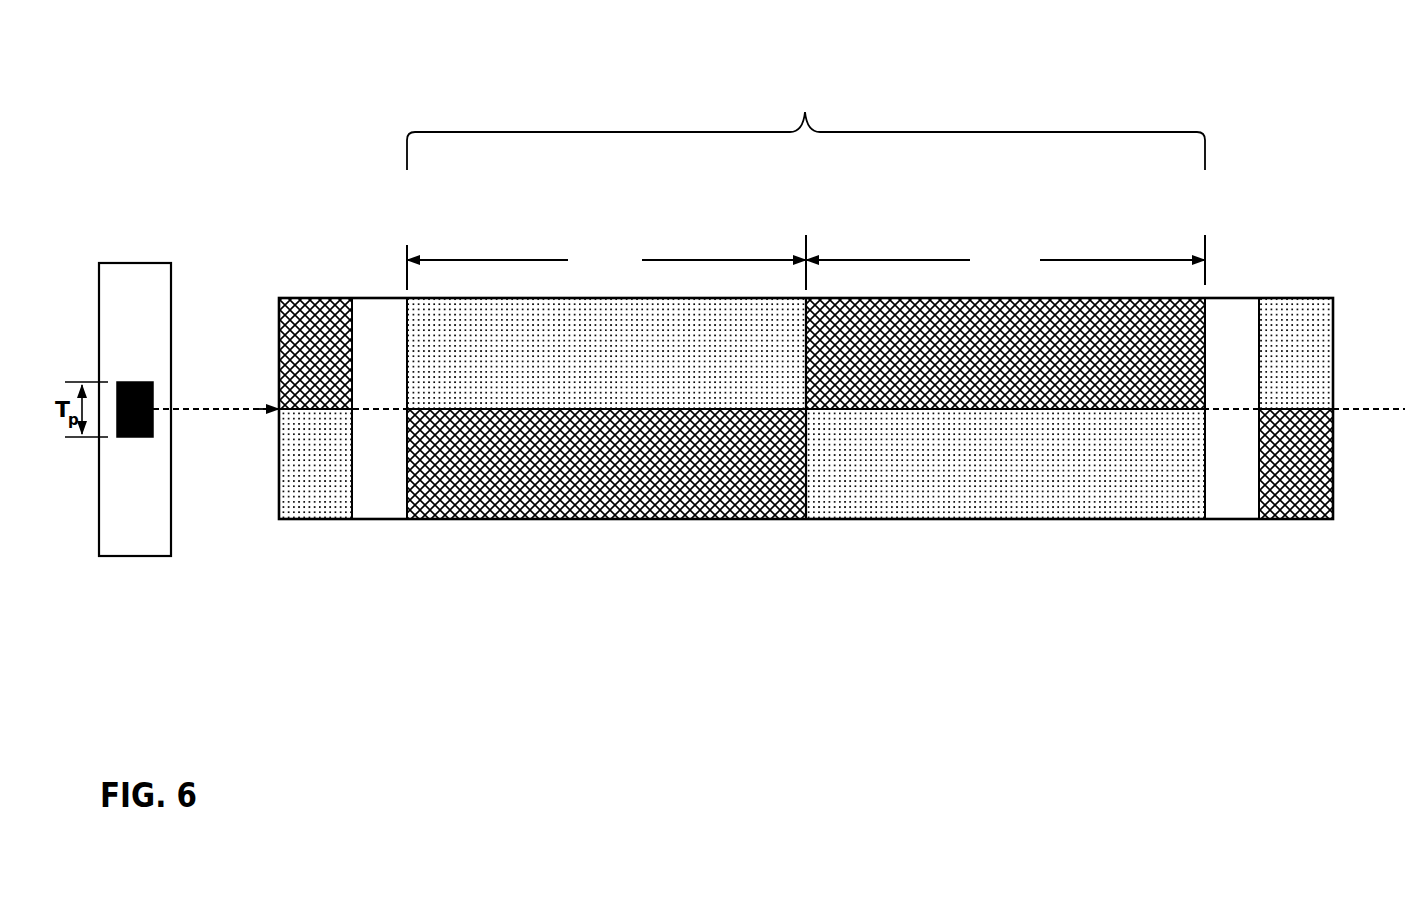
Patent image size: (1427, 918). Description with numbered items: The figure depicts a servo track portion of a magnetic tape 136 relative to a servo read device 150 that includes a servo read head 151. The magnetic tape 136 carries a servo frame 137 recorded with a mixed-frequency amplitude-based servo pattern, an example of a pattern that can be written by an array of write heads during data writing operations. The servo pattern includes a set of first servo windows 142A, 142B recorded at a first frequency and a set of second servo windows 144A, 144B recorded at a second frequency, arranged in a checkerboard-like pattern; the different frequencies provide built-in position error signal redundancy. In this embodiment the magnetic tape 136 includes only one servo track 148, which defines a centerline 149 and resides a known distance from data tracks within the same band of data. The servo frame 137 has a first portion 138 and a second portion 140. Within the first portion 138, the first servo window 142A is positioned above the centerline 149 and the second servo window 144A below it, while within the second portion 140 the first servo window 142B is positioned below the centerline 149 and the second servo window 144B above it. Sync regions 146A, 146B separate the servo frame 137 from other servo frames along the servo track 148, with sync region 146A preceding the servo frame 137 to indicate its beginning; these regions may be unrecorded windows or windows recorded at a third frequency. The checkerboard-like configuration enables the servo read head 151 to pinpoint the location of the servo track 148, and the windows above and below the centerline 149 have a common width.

The magnetic tape 136 is at (316, 112).
The servo frame 137 is at (806, 299).
The first portion 138 is at (606, 262).
The second portion 140 is at (1005, 260).
The first servo window 142A is at (515, 335).
The first servo window 142B is at (970, 485).
The second servo window 144A is at (537, 480).
The second servo window 144B is at (948, 335).
The sync region 146A is at (369, 298).
The sync region 146B is at (1243, 297).
The servo track 148 is at (270, 410).
The centerline 149 is at (1350, 407).
The servo read device 150 is at (137, 538).
The servo read head 151 is at (135, 380).